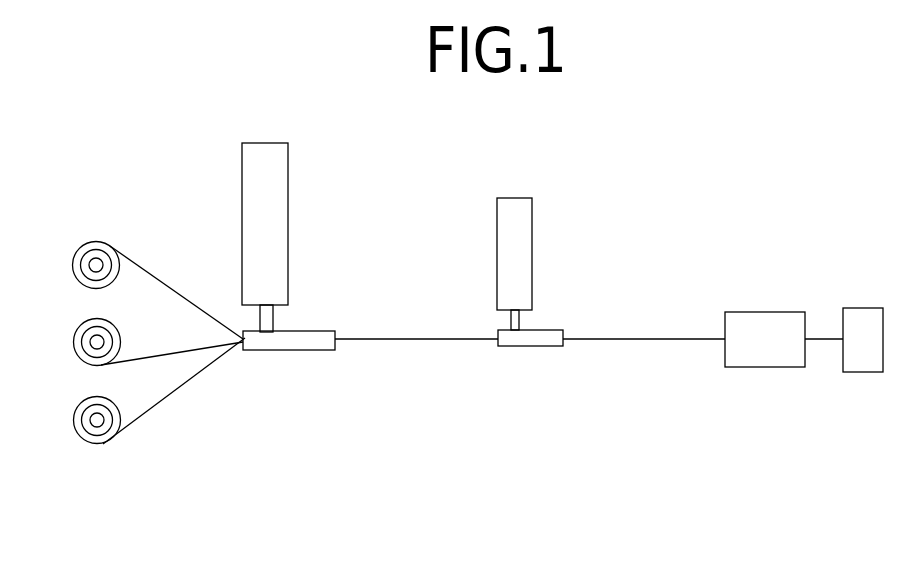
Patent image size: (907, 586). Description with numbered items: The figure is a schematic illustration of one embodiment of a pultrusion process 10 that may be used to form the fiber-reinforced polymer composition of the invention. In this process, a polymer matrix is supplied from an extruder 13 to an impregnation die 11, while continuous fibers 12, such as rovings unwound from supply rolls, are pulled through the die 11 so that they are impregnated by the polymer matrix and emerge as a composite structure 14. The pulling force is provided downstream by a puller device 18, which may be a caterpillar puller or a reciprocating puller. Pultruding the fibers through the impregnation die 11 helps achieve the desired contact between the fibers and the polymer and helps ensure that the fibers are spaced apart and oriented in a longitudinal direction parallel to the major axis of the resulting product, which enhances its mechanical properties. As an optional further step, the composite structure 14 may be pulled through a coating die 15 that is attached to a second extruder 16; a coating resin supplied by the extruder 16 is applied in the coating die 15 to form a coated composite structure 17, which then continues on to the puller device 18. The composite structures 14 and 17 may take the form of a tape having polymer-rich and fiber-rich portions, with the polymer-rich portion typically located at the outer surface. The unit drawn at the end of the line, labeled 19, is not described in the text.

The pultrusion process 10 is at (482, 412).
The impregnation die 11 is at (308, 350).
The continuous fibers 12 is at (107, 443).
The extruder 13 is at (288, 173).
The composite structure 14 is at (383, 338).
The coating die 15 is at (543, 346).
The extruder 16 is at (532, 258).
The coated composite structure 17 is at (680, 339).
The puller device 18 is at (755, 312).
The winding unit 19 is at (848, 372).